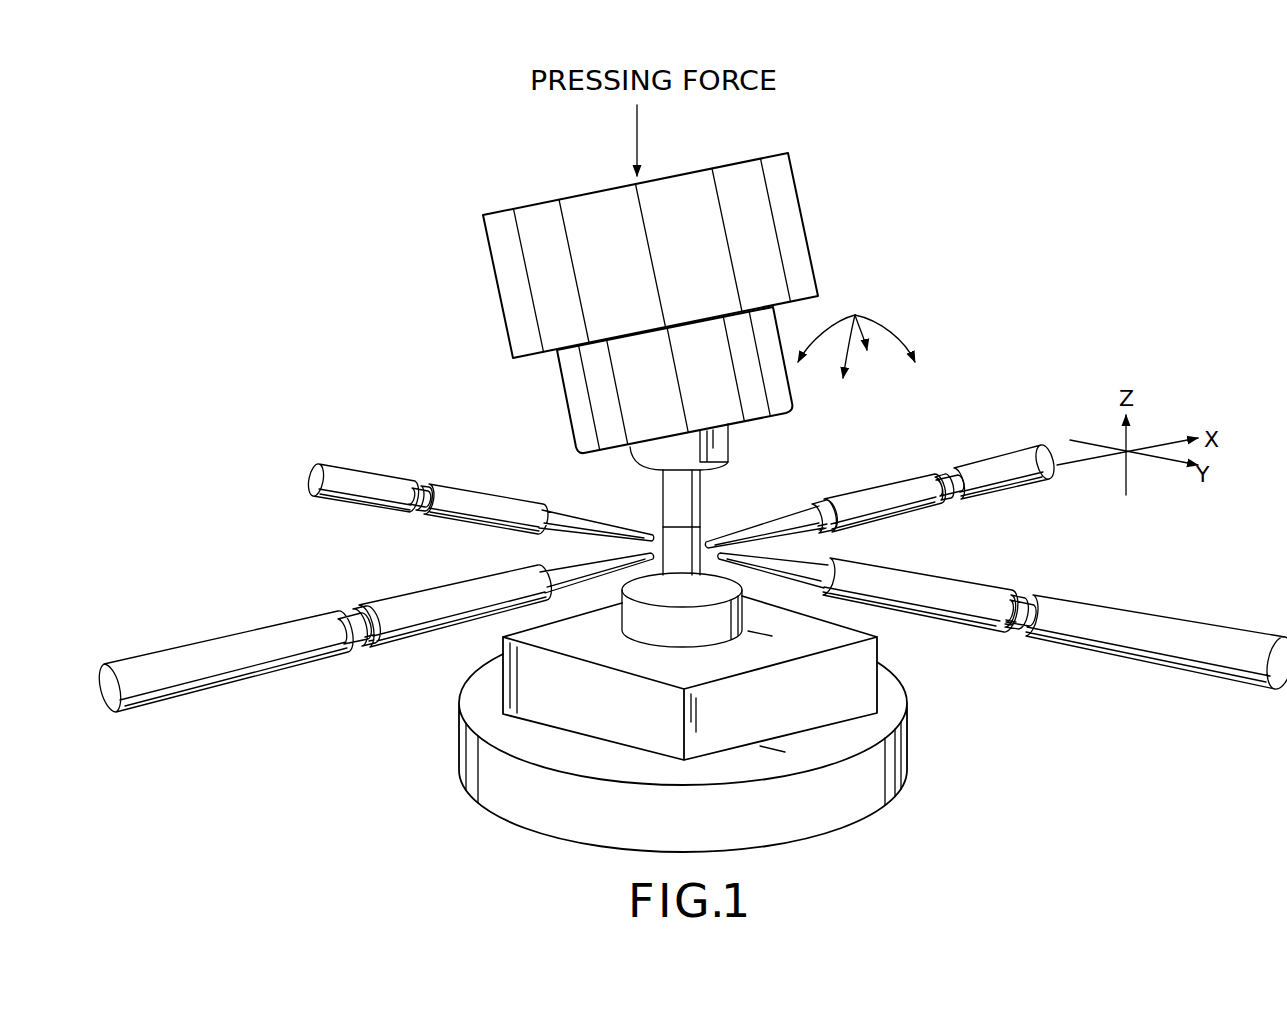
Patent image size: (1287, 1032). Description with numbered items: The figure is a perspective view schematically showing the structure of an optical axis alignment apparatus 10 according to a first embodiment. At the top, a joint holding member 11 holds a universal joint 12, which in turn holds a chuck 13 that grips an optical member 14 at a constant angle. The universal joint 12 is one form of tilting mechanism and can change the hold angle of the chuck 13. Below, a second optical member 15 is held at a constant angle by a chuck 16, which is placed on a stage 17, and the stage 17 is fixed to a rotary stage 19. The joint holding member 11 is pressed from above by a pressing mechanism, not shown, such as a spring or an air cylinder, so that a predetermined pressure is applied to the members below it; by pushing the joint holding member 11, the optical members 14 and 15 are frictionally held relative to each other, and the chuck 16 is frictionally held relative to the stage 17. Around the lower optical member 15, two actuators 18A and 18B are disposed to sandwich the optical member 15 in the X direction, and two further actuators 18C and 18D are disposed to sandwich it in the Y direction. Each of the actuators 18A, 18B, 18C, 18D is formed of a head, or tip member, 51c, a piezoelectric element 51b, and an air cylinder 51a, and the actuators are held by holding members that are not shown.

The optical axis alignment apparatus 10 is at (450, 228).
The joint holding member 11 is at (510, 293).
The universal joint 12 is at (576, 397).
The chuck 13 is at (733, 442).
The optical member 14 is at (672, 485).
The optical member 15 is at (693, 533).
The chuck 16 is at (645, 622).
The stage 17 is at (860, 683).
The rotary stage 19 is at (485, 758).
The actuator 18A is at (918, 470).
The actuator 18B is at (235, 620).
The actuator 18C is at (1123, 600).
The actuator 18D is at (395, 468).
The air cylinder 51a is at (1027, 490).
The piezoelectric element 51b is at (927, 508).
The head 51c is at (780, 530).